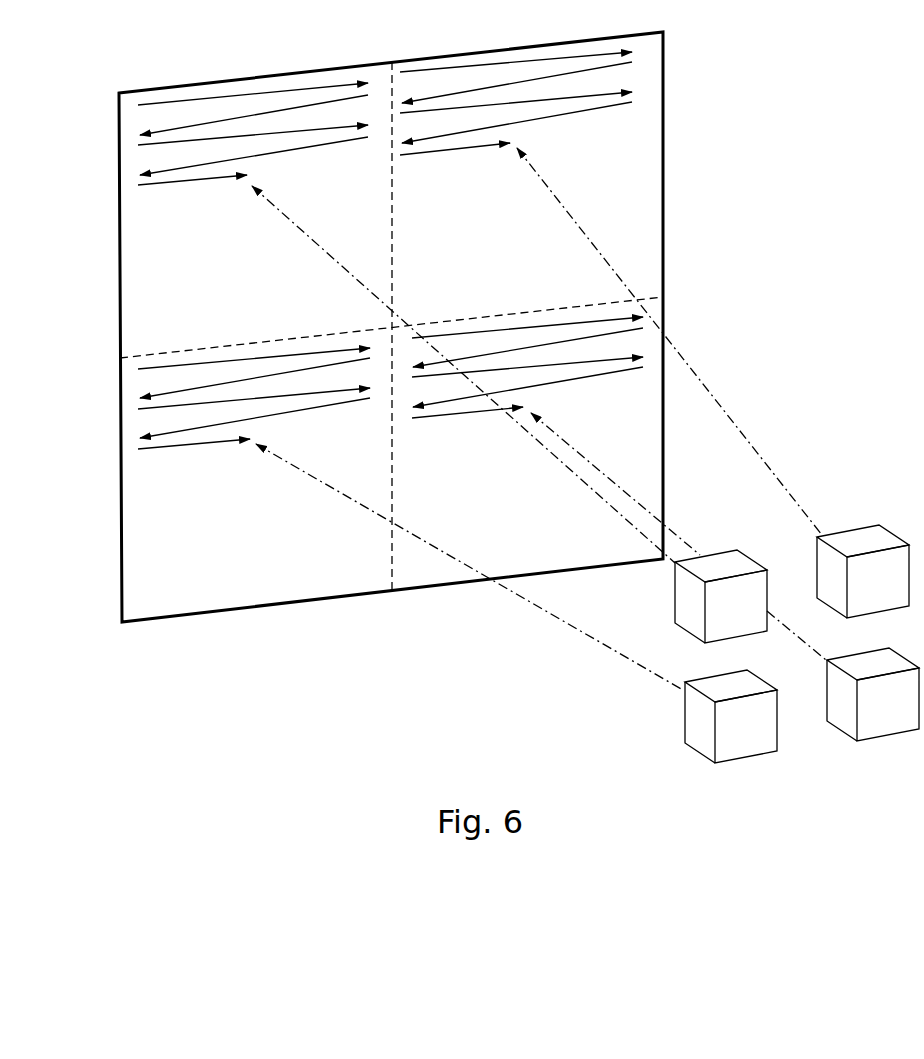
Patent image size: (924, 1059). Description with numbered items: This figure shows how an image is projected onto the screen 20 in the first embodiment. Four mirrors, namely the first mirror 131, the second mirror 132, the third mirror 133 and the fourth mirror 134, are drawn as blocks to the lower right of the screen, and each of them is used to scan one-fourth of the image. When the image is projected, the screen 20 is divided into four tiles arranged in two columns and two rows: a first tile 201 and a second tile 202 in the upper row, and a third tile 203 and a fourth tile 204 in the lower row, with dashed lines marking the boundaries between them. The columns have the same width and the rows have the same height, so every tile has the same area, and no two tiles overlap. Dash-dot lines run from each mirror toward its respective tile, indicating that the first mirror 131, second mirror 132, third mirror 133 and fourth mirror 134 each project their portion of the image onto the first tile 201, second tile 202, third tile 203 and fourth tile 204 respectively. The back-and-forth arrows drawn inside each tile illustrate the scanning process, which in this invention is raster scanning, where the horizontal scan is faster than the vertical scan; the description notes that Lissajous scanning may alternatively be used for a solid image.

The screen 20 is at (347, 327).
The first tile 201 is at (253, 206).
The second tile 202 is at (516, 177).
The third tile 203 is at (254, 472).
The fourth tile 204 is at (525, 445).
The first mirror 131 is at (509, 414).
The second mirror 132 is at (713, 383).
The third mirror 133 is at (516, 603).
The fourth mirror 134 is at (725, 577).